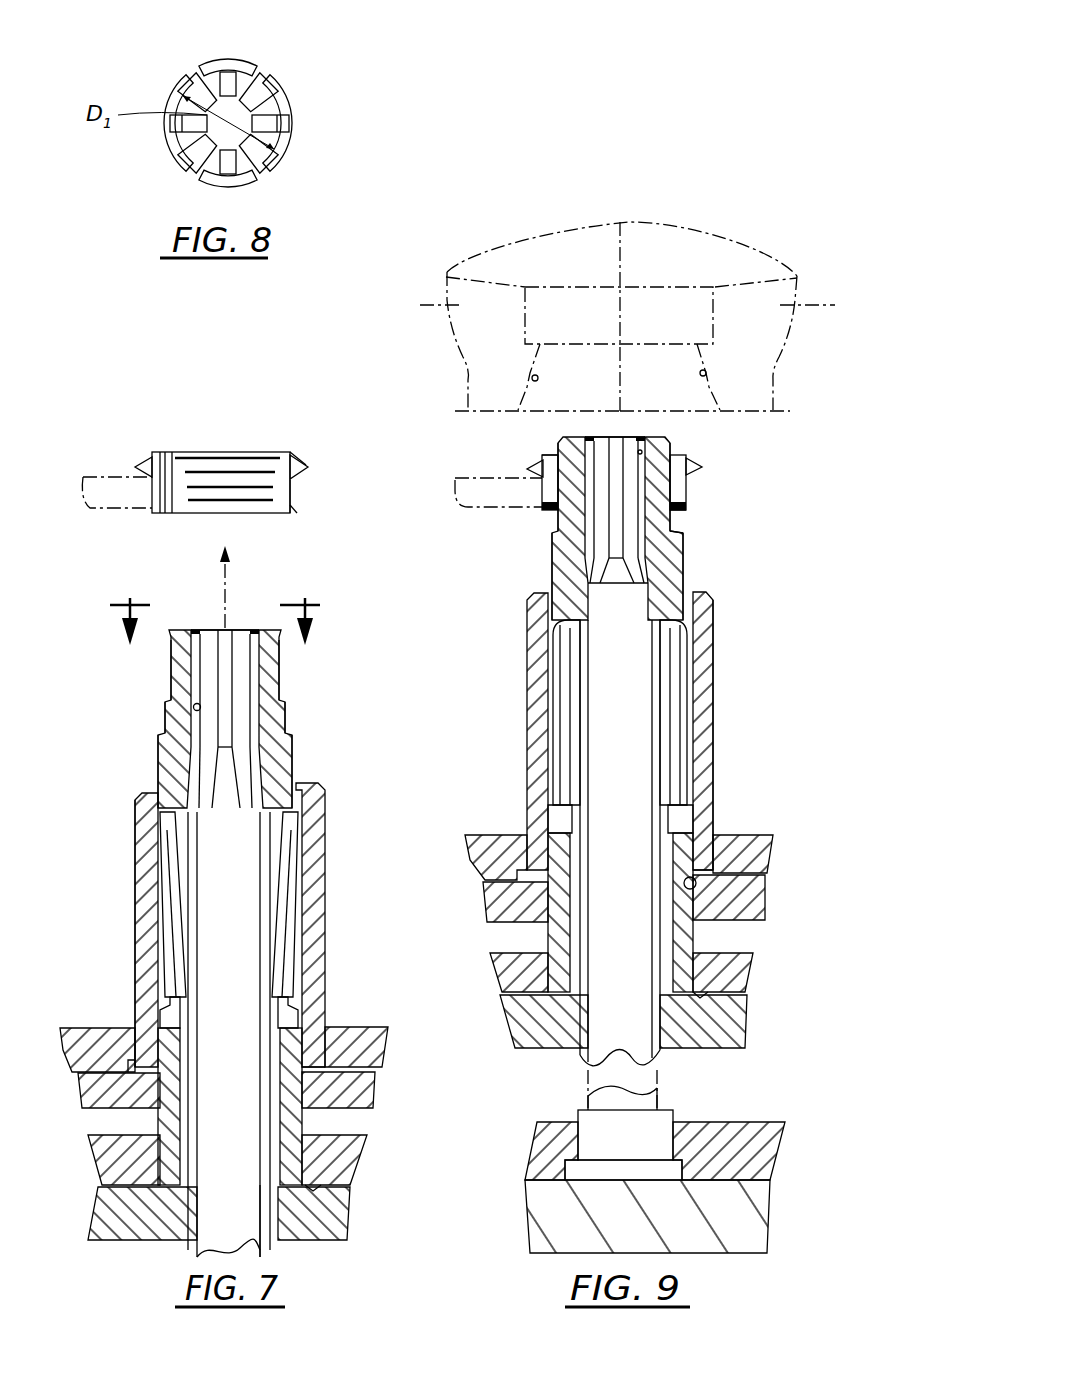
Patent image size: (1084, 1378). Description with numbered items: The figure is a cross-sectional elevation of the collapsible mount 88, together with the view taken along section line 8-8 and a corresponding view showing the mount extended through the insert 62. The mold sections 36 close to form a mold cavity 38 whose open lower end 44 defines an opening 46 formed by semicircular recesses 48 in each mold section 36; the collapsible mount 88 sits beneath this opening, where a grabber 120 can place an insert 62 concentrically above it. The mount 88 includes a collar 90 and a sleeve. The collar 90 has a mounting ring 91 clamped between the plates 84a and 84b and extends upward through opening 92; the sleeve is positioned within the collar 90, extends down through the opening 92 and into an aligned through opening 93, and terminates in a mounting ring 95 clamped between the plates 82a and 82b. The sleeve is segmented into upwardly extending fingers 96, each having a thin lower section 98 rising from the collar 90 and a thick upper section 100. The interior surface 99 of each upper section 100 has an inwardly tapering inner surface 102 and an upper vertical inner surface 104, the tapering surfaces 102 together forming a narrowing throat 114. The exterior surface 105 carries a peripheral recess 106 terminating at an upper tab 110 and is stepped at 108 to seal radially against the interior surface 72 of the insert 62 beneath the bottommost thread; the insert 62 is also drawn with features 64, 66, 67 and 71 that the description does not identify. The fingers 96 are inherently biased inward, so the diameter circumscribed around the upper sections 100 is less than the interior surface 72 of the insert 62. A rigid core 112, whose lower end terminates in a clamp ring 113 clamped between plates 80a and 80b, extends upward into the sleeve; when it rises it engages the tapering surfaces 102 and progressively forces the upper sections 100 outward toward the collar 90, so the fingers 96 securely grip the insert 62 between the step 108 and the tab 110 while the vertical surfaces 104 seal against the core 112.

In FIG. 7, the section line 8- 8 is at (215, 622).
In FIG. 9, the mold section 36 is at (623, 305).
In FIG. 9, the mold cavity 38 is at (733, 279).
In FIG. 9, the open lower end 44 is at (715, 413).
In FIG. 9, the opening 46 is at (520, 413).
In FIG. 9, the semicircular recesses 48 is at (531, 378).
In FIG. 7, the insert 62 is at (225, 410).
In FIG. 9, the insert 62 is at (700, 486).
In FIG. 7, the collar body 64 is at (302, 497).
In FIG. 7, the conical surface 66 is at (308, 467).
In FIG. 9, the conical surface 66 is at (702, 466).
In FIG. 7, the collar end 67 is at (286, 452).
In FIG. 7, the collar chamfer 71 is at (293, 513).
In FIG. 9, the collar chamfer 71 is at (680, 516).
In FIG. 7, the interior surface 72 is at (168, 452).
In FIG. 9, the interior surface 72 is at (560, 505).
In FIG. 9, the plate 80a is at (780, 1137).
In FIG. 9, the plate 80b is at (745, 1213).
In FIG. 7, the plate 82a is at (362, 1140).
In FIG. 9, the plate 82a is at (745, 970).
In FIG. 7, the plate 82b is at (348, 1212).
In FIG. 9, the plate 82b is at (748, 1037).
In FIG. 7, the plate 84a is at (352, 1028).
In FIG. 9, the plate 84a is at (768, 858).
In FIG. 7, the plate 84b is at (372, 1098).
In FIG. 9, the plate 84b is at (765, 888).
In FIG. 7, the collapsible mount 88 is at (342, 938).
In FIG. 9, the collapsible mount 88 is at (742, 686).
In FIG. 7, the collar 90 is at (327, 877).
In FIG. 9, the collar 90 is at (714, 730).
In FIG. 7, the mounting ring 91 is at (340, 1067).
In FIG. 9, the mounting ring 91 is at (718, 868).
In FIG. 7, the opening 92 is at (160, 1068).
In FIG. 9, the opening 92 is at (696, 896).
In FIG. 7, the through opening 93 is at (273, 1242).
In FIG. 7, the mounting ring 95 is at (318, 1189).
In FIG. 9, the mounting ring 95 is at (702, 1000).
In FIG. 8, the fingers 96 is at (292, 131).
In FIG. 7, the fingers 96 is at (293, 765).
In FIG. 9, the fingers 96 is at (681, 540).
In FIG. 7, the lower section 98 is at (175, 935).
In FIG. 9, the lower section 98 is at (682, 652).
In FIG. 7, the interior surface 99 is at (195, 708).
In FIG. 7, the upper section 100 is at (293, 745).
In FIG. 9, the upper section 100 is at (553, 578).
In FIG. 7, the tapering inner surface 102 is at (157, 810).
In FIG. 9, the tapering inner surface 102 is at (658, 568).
In FIG. 7, the vertical inner surface 104 is at (217, 627).
In FIG. 9, the vertical inner surface 104 is at (643, 451).
In FIG. 7, the exterior surface 105 is at (160, 765).
In FIG. 9, the exterior surface 105 is at (688, 590).
In FIG. 7, the peripheral recess 106 is at (171, 680).
In FIG. 9, the peripheral recess 106 is at (690, 504).
In FIG. 7, the step 108 is at (165, 703).
In FIG. 9, the step 108 is at (548, 505).
In FIG. 8, the tab 110 is at (262, 78).
In FIG. 7, the tab 110 is at (192, 634).
In FIG. 9, the tab 110 is at (681, 437).
In FIG. 7, the core 112 is at (192, 960).
In FIG. 9, the core 112 is at (586, 686).
In FIG. 9, the clamp ring 113 is at (675, 1132).
In FIG. 7, the throat 114 is at (226, 812).
In FIG. 9, the throat 114 is at (620, 541).
In FIG. 7, the grabber 120 is at (104, 477).
In FIG. 9, the grabber 120 is at (470, 476).